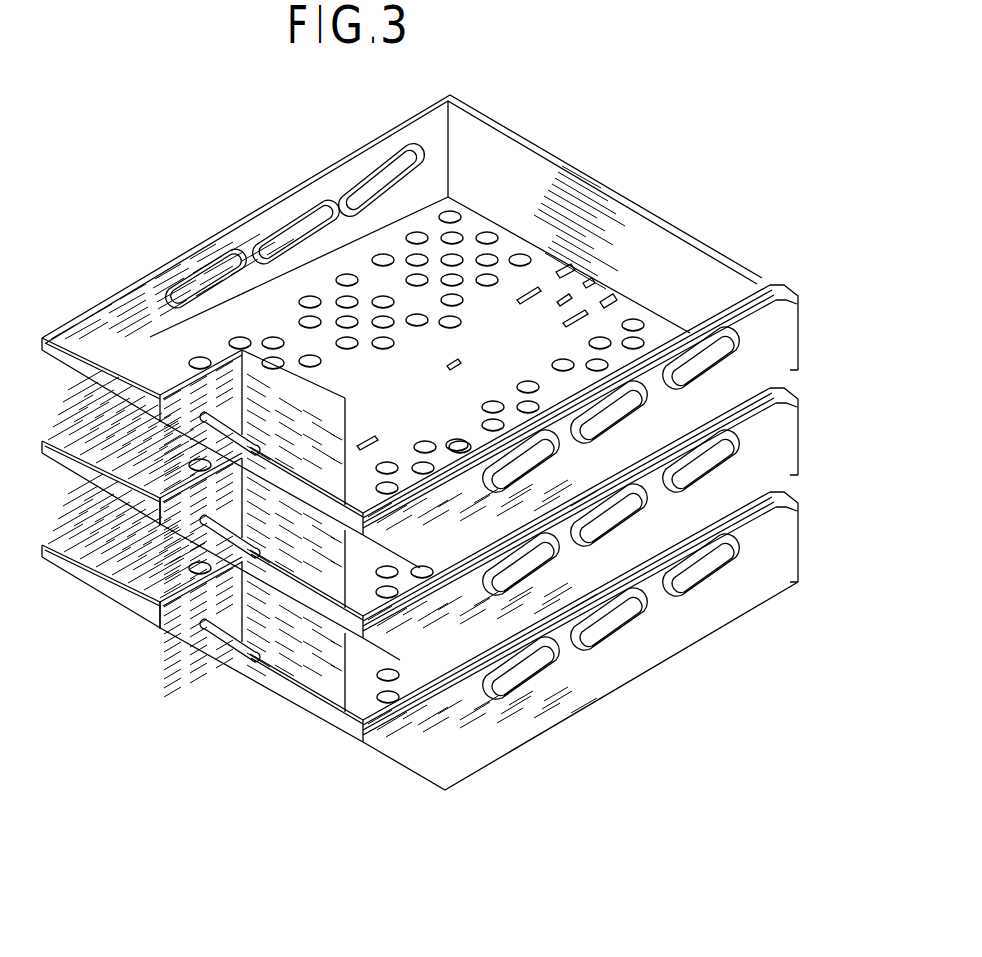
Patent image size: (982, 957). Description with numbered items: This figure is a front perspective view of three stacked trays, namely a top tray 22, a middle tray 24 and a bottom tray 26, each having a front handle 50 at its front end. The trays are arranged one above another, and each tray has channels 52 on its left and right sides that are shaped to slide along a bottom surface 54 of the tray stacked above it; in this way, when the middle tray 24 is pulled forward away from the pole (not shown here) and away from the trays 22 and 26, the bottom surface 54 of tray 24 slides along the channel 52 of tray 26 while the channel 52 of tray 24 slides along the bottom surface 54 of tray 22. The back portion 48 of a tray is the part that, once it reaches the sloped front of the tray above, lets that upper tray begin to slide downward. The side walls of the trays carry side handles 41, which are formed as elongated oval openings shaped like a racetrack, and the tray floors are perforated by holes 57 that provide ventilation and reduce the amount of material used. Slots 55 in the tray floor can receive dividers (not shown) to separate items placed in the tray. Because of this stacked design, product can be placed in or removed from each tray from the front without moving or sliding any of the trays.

The tray 22 is at (42, 336).
The tray 24 is at (42, 440).
The tray 26 is at (43, 550).
The side handles 41 is at (297, 225).
The back portion 48 is at (799, 333).
The front handle 50 is at (295, 402).
The channels 52 is at (760, 290).
The bottom surface 54 is at (801, 398).
The slots 55 is at (558, 272).
The holes 57 is at (455, 213).